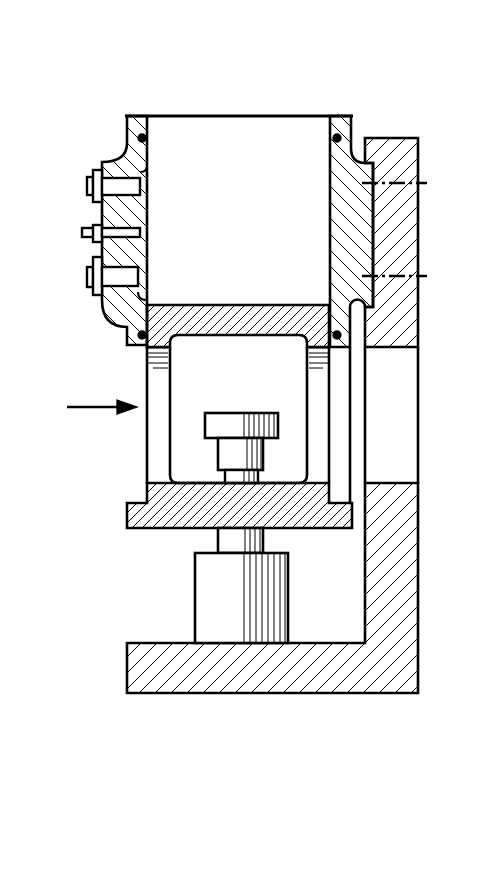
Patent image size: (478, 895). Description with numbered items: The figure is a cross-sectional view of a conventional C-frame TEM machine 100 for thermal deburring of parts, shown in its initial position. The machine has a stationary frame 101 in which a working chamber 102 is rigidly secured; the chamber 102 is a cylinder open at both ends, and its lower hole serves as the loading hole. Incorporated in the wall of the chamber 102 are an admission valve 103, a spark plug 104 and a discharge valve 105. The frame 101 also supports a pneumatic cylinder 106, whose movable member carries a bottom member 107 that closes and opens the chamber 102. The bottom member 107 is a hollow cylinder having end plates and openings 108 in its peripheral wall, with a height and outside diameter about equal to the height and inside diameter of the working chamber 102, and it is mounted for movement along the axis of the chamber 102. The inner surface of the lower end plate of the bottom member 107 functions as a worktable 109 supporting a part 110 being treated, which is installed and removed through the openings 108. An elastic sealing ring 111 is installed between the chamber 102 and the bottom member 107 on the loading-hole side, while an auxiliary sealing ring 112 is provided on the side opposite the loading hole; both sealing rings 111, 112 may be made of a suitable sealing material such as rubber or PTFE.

The C-frame TEM machine 100 is at (82, 94).
The stationary frame 101 is at (145, 665).
The working chamber 102 is at (346, 162).
The admission valve 103 is at (88, 277).
The spark plug 104 is at (81, 232).
The discharge valve 105 is at (88, 182).
The pneumatic cylinder 106 is at (208, 600).
The bottom member 107 is at (127, 510).
The openings 108 is at (313, 409).
The worktable 109 is at (191, 483).
The part 110 is at (218, 421).
The elastic sealing ring 111 is at (141, 345).
The auxiliary sealing ring 112 is at (150, 136).